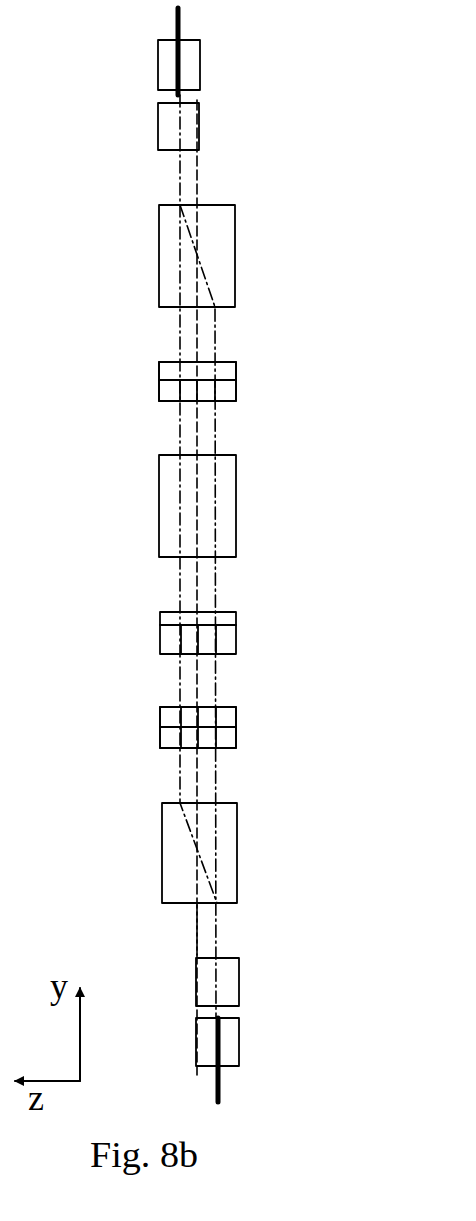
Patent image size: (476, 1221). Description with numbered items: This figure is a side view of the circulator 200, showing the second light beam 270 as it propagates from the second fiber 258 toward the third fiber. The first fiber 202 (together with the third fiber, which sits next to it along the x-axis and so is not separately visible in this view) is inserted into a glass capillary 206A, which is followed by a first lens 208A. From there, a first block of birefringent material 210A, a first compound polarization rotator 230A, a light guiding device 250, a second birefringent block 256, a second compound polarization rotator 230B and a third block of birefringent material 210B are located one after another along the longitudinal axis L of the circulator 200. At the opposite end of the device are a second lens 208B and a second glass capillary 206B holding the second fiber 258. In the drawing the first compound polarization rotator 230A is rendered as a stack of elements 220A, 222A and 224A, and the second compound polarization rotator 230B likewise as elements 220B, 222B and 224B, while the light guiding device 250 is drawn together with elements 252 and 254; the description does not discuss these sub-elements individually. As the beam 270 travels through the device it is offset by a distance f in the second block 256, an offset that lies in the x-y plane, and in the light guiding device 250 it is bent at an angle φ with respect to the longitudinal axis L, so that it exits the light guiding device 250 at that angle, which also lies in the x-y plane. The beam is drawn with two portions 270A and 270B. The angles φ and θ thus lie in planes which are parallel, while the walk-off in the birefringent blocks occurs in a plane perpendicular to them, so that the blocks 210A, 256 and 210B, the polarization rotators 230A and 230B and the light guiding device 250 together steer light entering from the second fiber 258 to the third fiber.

The circulator 200 is at (72, 146).
The first fiber 202 is at (222, 1090).
The glass capillary 206A is at (196, 1037).
The second glass capillary 206B is at (200, 68).
The first lens 208A is at (239, 978).
The second lens 208B is at (158, 137).
The first block of birefringent material 210A is at (238, 858).
The third block of birefringent material 210B is at (235, 240).
The wave plate assembly 220A is at (222, 712).
The wave plate assembly 220B is at (200, 371).
The wave plate 222A is at (236, 740).
The wave plate 222B is at (236, 392).
The wave plate 224A is at (236, 712).
The wave plate 224B is at (159, 365).
The first compound polarization rotator 230A is at (266, 786).
The second compound polarization rotator 230B is at (254, 363).
The light guiding device 250 is at (208, 554).
The wave plate 252 is at (160, 638).
The wave plate 254 is at (236, 612).
The second birefringent block 256 is at (159, 500).
The second fiber 258 is at (182, 25).
The second light beam 270 is at (181, 178).
The first beam component 270A is at (181, 262).
The second beam component 270B is at (208, 282).
The longitudinal axis L is at (200, 923).